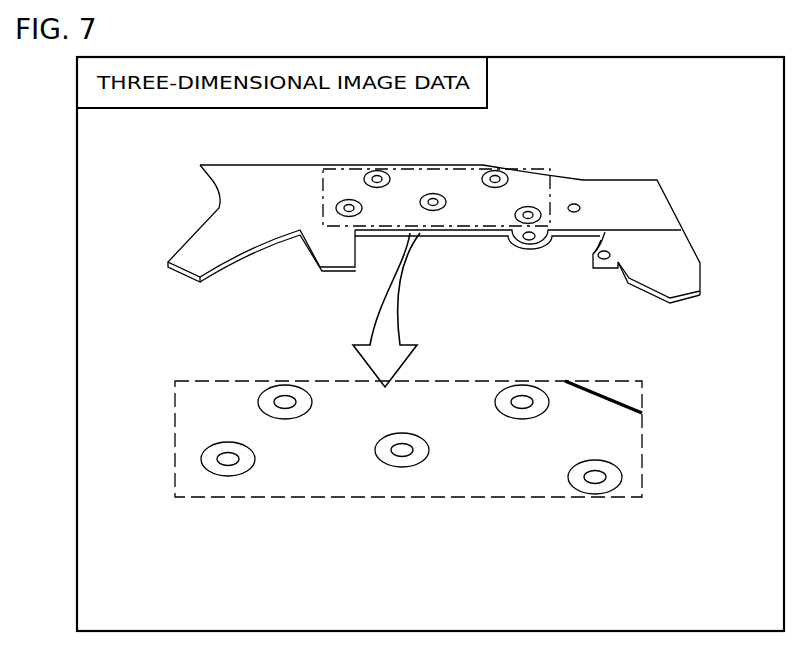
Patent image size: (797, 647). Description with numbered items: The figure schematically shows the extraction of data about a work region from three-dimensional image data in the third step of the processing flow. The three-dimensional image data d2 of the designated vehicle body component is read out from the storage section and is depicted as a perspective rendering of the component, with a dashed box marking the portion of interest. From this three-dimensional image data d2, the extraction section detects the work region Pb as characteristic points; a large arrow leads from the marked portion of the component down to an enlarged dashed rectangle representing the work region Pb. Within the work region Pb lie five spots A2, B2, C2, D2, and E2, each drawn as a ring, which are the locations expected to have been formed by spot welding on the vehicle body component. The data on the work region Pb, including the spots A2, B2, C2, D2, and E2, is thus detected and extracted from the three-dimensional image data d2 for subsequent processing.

The three-dimensional image data d2 is at (588, 177).
The work region Pb is at (646, 419).
The spot A2 is at (257, 398).
The spot B2 is at (551, 410).
The spot C2 is at (225, 474).
The spot D2 is at (415, 461).
The spot E2 is at (613, 488).